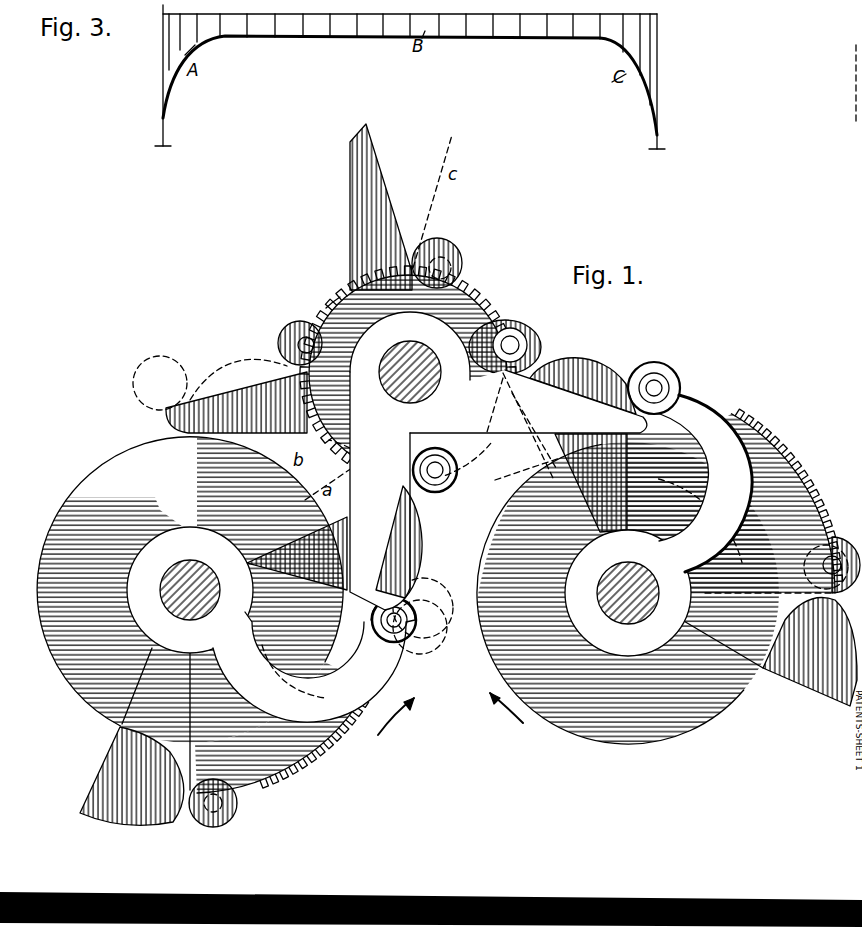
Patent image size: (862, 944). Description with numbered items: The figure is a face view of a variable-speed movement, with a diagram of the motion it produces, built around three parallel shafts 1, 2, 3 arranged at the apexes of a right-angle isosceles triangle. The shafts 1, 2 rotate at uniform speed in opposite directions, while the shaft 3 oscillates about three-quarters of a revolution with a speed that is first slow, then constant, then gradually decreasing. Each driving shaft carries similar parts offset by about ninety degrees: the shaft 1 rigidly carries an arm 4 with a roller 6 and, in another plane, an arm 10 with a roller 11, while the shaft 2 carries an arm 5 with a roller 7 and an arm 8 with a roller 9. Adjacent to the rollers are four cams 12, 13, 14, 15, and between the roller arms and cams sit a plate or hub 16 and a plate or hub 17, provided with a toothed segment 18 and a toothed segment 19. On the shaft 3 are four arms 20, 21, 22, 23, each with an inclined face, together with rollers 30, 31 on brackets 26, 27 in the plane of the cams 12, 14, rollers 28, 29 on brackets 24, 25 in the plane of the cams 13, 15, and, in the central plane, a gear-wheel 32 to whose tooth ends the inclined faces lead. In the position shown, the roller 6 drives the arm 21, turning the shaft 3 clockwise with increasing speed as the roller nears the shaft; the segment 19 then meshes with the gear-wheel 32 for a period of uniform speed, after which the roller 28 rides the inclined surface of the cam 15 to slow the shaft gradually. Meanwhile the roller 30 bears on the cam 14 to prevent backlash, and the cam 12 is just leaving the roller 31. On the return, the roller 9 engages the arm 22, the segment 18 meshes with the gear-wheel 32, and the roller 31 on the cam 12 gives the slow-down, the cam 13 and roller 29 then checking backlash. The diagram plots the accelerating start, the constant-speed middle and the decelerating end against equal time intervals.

The shaft 1 is at (190, 566).
The shaft 2 is at (655, 598).
The shaft 3 is at (420, 358).
The arm 4 is at (314, 660).
The arm 5 is at (705, 483).
The roller 6 is at (414, 612).
The roller 7 is at (662, 372).
The arm 8 is at (838, 540).
The roller 9 is at (430, 638).
The arm 10 is at (268, 782).
The roller 11 is at (158, 368).
The cam 12 is at (561, 483).
The cam 13 is at (442, 580).
The cam 14 is at (418, 545).
The cam 15 is at (228, 356).
The plate or hub 16 is at (624, 588).
The plate or hub 17 is at (186, 613).
The toothed segment 18 is at (785, 470).
The toothed segment 19 is at (322, 748).
The arm 20 is at (528, 395).
The arm 21 is at (498, 461).
The arm 22 is at (252, 398).
The arm 23 is at (356, 205).
The bracket 24 is at (482, 302).
The bracket 25 is at (326, 310).
The bracket 26 is at (474, 427).
The bracket 27 is at (516, 425).
The roller 28 is at (452, 258).
The roller 29 is at (290, 340).
The roller 30 is at (445, 488).
The roller 31 is at (532, 355).
The gear-wheel 32 is at (503, 320).